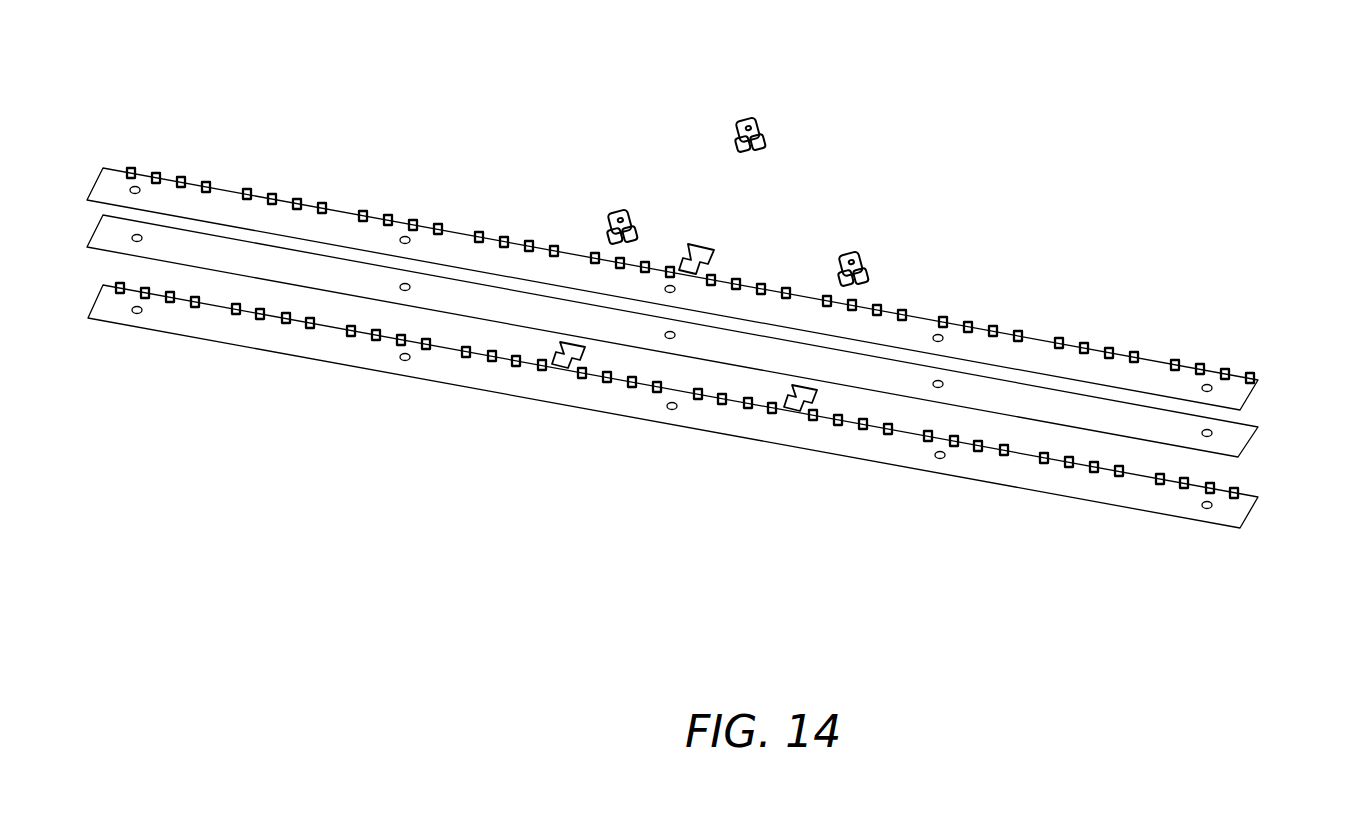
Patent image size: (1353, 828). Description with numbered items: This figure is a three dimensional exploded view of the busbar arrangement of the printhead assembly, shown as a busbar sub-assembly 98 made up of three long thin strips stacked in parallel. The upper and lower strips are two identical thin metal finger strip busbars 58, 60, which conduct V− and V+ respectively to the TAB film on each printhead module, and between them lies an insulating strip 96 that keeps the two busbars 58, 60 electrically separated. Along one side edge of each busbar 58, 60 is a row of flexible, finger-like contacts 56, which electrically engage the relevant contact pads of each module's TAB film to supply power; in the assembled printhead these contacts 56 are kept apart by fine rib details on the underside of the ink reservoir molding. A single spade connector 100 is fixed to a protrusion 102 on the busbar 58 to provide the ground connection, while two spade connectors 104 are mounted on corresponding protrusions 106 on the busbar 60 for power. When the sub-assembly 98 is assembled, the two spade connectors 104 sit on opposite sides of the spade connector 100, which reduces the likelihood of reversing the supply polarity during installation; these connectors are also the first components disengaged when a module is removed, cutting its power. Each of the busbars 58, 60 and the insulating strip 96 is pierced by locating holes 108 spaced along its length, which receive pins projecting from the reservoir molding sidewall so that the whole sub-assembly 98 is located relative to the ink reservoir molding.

The finger-like contacts 56 is at (209, 181).
The busbar 58 is at (1256, 385).
The busbar 60 is at (1240, 512).
The insulating strip 96 is at (1242, 437).
The busbar sub-assembly 98 is at (1212, 248).
The spade connector 100 is at (762, 113).
The protrusion 102 is at (709, 251).
The spade connectors 104 is at (631, 212).
The protrusions 106 is at (565, 370).
The locating holes 108 is at (404, 236).